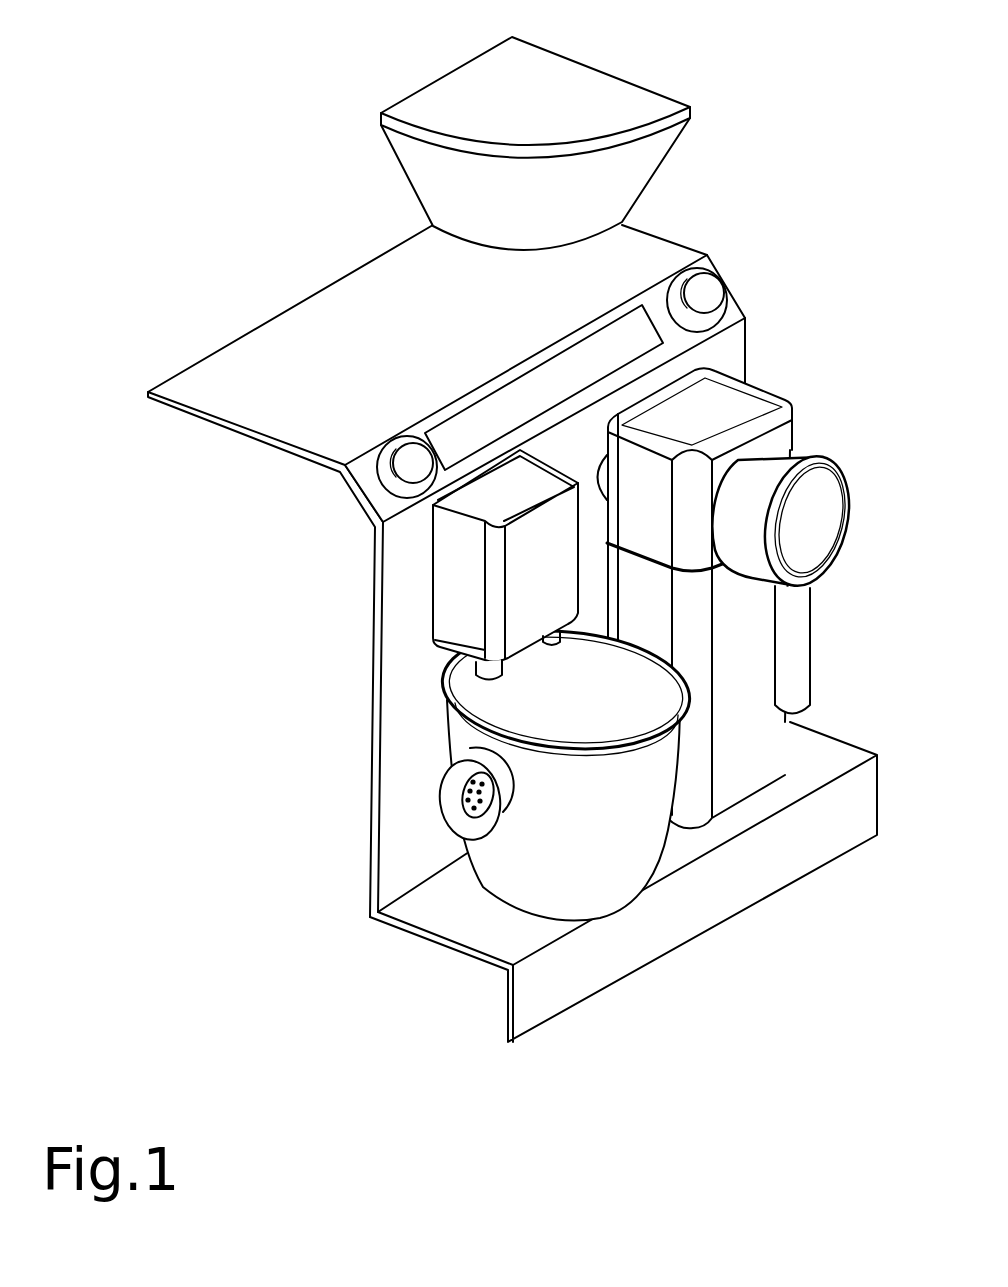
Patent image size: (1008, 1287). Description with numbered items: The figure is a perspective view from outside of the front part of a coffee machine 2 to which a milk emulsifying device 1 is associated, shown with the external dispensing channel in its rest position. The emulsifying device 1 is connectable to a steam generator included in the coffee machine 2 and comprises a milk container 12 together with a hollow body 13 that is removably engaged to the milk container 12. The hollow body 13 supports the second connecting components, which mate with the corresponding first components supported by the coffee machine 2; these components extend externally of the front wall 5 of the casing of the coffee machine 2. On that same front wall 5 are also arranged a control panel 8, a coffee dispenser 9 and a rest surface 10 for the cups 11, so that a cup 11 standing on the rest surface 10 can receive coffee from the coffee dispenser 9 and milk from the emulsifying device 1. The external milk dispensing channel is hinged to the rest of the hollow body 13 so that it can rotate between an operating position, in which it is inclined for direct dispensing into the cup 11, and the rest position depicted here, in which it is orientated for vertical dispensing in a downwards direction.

The emulsifying device 1 is at (503, 550).
The coffee machine 2 is at (500, 550).
The front wall 5 is at (370, 727).
The control panel 8 is at (478, 423).
The coffee dispenser 9 is at (562, 592).
The rest surface 10 is at (465, 920).
The cup 11 is at (620, 820).
The milk container 12 is at (728, 760).
The hollow body 13 is at (741, 508).